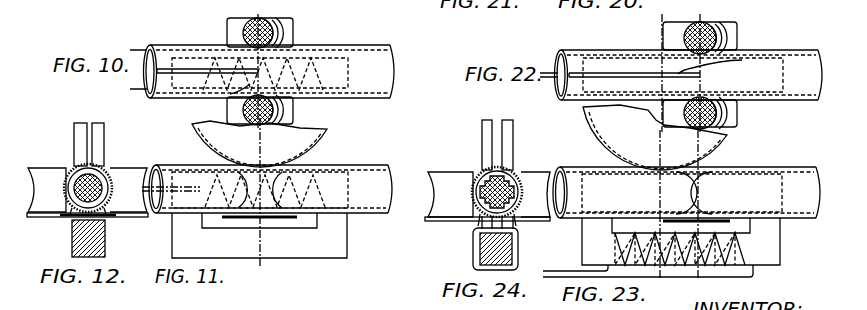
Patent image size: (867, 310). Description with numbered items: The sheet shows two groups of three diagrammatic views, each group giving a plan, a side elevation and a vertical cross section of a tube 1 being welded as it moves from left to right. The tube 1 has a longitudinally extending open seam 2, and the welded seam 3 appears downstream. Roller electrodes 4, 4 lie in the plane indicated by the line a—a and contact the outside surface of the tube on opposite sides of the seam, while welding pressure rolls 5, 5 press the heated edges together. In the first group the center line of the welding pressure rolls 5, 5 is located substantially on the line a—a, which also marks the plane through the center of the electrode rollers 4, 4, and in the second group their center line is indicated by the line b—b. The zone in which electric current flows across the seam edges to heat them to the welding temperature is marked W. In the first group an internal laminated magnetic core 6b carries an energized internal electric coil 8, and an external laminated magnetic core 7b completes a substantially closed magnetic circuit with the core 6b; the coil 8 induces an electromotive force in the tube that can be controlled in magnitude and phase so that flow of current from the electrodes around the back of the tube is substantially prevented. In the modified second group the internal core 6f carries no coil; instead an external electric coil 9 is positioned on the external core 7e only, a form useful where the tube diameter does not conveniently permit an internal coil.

In FIG. 10, the tube 1 is at (176, 48).
In FIG. 11, the tube 1 is at (368, 212).
In FIG. 12, the tube 1 is at (68, 172).
In FIG. 22, the tube 1 is at (591, 50).
In FIG. 23, the tube 1 is at (790, 216).
In FIG. 24, the tube 1 is at (473, 178).
In FIG. 10, the open seam 2 is at (183, 69).
In FIG. 11, the open seam 2 is at (174, 166).
In FIG. 22, the open seam 2 is at (600, 70).
In FIG. 23, the open seam 2 is at (584, 168).
In FIG. 24, the open seam 2 is at (506, 168).
In FIG. 10, the welded seam 3 is at (367, 62).
In FIG. 11, the welded seam 3 is at (350, 162).
In FIG. 22, the welded seam 3 is at (788, 64).
In FIG. 23, the welded seam 3 is at (768, 166).
In FIG. 11, the roller electrodes 4 is at (318, 128).
In FIG. 12, the roller electrodes 4 is at (74, 122).
In FIG. 23, the roller electrodes 4 is at (586, 124).
In FIG. 24, the roller electrodes 4 is at (482, 122).
In FIG. 10, the welding pressure rolls 5 is at (293, 30).
In FIG. 11, the welding pressure rolls 5 is at (284, 206).
In FIG. 12, the welding pressure rolls 5 is at (44, 172).
In FIG. 22, the welding pressure rolls 5 is at (733, 29).
In FIG. 23, the welding pressure rolls 5 is at (716, 194).
In FIG. 24, the welding pressure rolls 5 is at (448, 176).
In FIG. 10, the internal laminated magnetic core 6b is at (336, 93).
In FIG. 11, the internal laminated magnetic core 6b is at (340, 170).
In FIG. 12, the internal laminated magnetic core 6b is at (110, 206).
In FIG. 22, the internal laminated magnetic core 6f is at (768, 58).
In FIG. 23, the internal laminated magnetic core 6f is at (748, 174).
In FIG. 24, the internal laminated magnetic core 6f is at (510, 196).
In FIG. 11, the external laminated magnetic core 7b is at (347, 250).
In FIG. 12, the external laminated magnetic core 7b is at (72, 240).
In FIG. 23, the external laminated magnetic core 7e is at (774, 256).
In FIG. 24, the external laminated magnetic core 7e is at (480, 246).
In FIG. 10, the internal electric coil 8 is at (328, 65).
In FIG. 11, the internal electric coil 8 is at (324, 174).
In FIG. 12, the internal electric coil 8 is at (54, 216).
In FIG. 23, the external electric coil 9 is at (754, 268).
In FIG. 10, the welding zone W is at (228, 98).
In FIG. 12, the welding zone W is at (102, 168).
In FIG. 22, the welding zone W is at (715, 53).
In FIG. 10, the line a— a is at (259, 64).
In FIG. 11, the line a— a is at (258, 200).
In FIG. 22, the line a— a is at (659, 66).
In FIG. 23, the line a— a is at (658, 213).
In FIG. 22, the line b— b is at (700, 66).
In FIG. 23, the line b— b is at (697, 213).